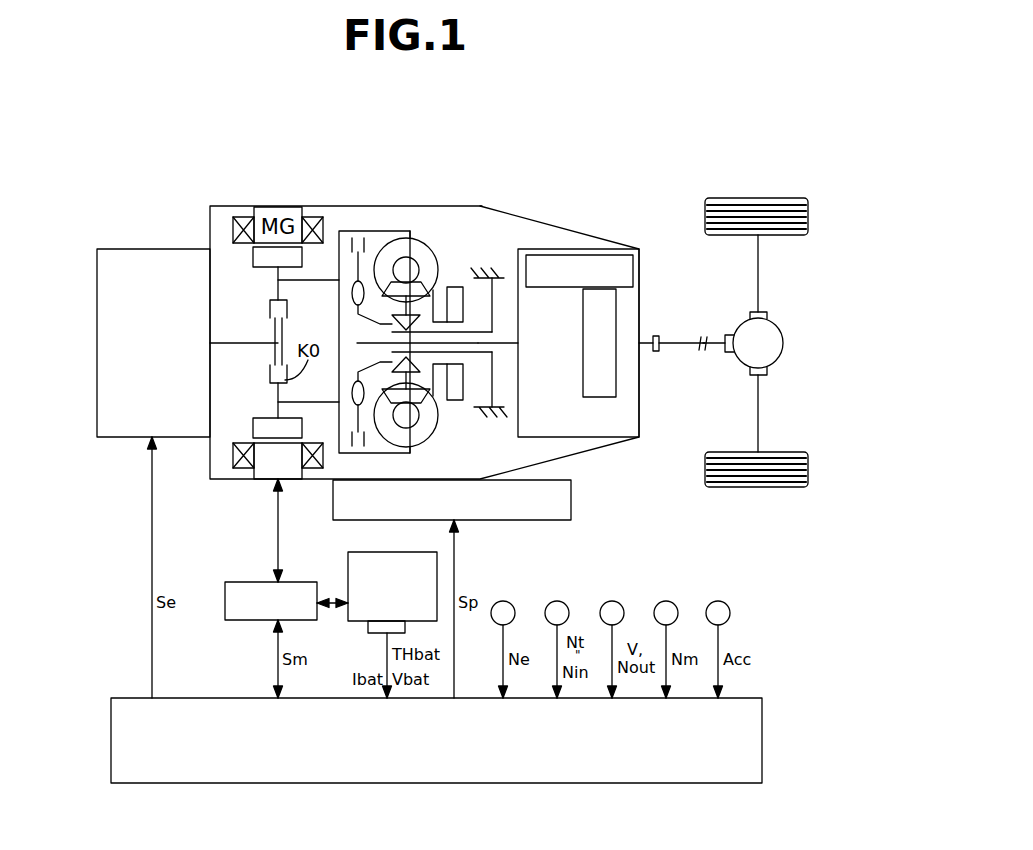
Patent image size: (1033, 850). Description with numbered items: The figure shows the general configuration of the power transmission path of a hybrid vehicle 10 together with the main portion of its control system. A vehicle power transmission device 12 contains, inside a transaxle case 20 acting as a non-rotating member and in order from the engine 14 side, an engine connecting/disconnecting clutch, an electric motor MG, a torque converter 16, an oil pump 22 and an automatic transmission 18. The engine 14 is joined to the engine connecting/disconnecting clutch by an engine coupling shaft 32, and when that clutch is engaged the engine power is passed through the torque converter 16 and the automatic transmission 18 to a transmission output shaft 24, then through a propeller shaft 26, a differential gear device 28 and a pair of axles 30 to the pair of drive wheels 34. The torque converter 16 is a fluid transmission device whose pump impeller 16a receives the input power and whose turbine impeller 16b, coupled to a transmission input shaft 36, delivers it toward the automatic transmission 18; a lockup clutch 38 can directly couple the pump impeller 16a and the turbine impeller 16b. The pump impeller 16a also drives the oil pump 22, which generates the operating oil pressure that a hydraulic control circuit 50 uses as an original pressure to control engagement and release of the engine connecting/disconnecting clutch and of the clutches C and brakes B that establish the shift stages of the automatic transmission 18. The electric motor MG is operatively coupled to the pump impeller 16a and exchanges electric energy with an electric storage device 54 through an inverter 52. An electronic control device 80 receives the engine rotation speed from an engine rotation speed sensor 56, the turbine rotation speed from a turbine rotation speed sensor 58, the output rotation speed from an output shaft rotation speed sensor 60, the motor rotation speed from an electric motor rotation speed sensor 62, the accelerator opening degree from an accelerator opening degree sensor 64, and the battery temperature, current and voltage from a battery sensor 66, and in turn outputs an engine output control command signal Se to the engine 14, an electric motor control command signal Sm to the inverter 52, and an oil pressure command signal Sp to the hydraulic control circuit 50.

The hybrid vehicle 10 is at (583, 127).
The vehicle power transmission device 12 is at (415, 165).
The engine 14 is at (121, 254).
The torque converter 16 is at (428, 344).
The pump impeller 16a is at (425, 428).
The turbine impeller 16b is at (387, 429).
The automatic transmission 18 is at (625, 296).
The transaxle case 20 is at (433, 206).
The oil pump 22 is at (455, 398).
The transmission output shaft 24 is at (643, 338).
The propeller shaft 26 is at (680, 348).
The differential gear device 28 is at (770, 330).
The axles 30 is at (758, 275).
The engine coupling shaft 32 is at (244, 341).
The drive wheels 34 is at (710, 216).
The transmission input shaft 36 is at (497, 347).
The lockup clutch 38 is at (372, 242).
The hydraulic control circuit 50 is at (572, 490).
The inverter 52 is at (227, 613).
The electric storage device 54 is at (357, 560).
The engine rotation speed sensor 56 is at (503, 601).
The turbine rotation speed sensor 58 is at (557, 601).
The output shaft rotation speed sensor 60 is at (612, 601).
The electric motor rotation speed sensor 62 is at (666, 601).
The accelerator opening degree sensor 64 is at (718, 601).
The battery sensor 66 is at (368, 630).
The electronic control device 80 is at (745, 710).